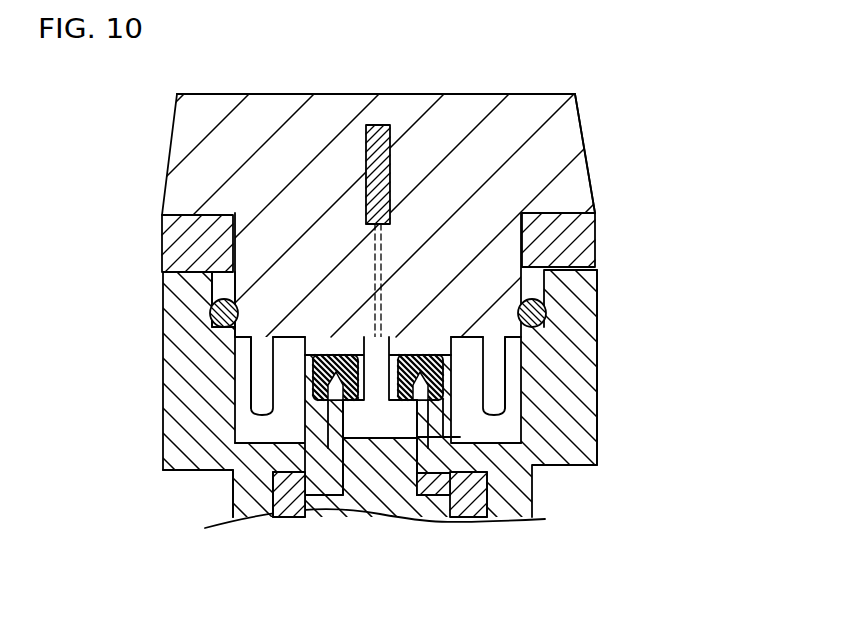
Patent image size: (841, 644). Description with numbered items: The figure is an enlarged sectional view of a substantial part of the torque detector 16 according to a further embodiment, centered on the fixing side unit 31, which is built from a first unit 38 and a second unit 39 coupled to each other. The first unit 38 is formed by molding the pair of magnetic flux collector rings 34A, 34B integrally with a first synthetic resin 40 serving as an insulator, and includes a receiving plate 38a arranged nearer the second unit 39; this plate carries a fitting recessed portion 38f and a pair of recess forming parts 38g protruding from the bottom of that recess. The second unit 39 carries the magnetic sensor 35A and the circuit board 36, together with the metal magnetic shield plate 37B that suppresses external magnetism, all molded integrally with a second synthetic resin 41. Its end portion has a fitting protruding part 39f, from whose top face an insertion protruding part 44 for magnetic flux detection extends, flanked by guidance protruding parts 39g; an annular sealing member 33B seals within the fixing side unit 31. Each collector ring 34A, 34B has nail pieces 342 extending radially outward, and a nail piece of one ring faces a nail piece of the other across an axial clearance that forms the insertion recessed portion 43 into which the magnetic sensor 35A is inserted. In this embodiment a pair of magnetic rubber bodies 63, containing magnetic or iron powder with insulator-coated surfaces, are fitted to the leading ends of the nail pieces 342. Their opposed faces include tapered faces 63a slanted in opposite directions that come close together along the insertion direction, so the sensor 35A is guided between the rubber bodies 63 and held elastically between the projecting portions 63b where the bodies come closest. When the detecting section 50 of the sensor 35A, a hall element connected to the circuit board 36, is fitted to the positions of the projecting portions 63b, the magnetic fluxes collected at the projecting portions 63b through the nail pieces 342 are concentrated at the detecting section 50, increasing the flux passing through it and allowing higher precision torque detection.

The torque detector 16 is at (494, 70).
The fixing side unit 31 is at (602, 127).
The annular sealing member 33B is at (212, 312).
The magnetic flux collector ring 34A is at (465, 530).
The magnetic flux collector ring 34B is at (294, 519).
The nail piece 342 is at (318, 507).
The magnetic sensor 35A is at (372, 430).
The circuit board 36 is at (366, 132).
The magnetic shield plate 37B is at (600, 236).
The first unit 38 is at (158, 358).
The receiving plate 38a is at (598, 332).
The fitting recessed portion 38f is at (212, 300).
The recess forming part 38g is at (262, 390).
The second unit 39 is at (158, 180).
The fitting protruding part 39f is at (232, 290).
The guidance protruding part 39g is at (258, 413).
The first synthetic resin 40 is at (188, 451).
The second synthetic resin 41 is at (188, 127).
The insertion recessed portion 43 is at (355, 508).
The insertion protruding part 44 is at (350, 490).
The detecting section 50 is at (376, 345).
The magnetic rubber body 63 is at (325, 354).
The tapered face 63a is at (333, 356).
The projecting portion 63b is at (338, 402).